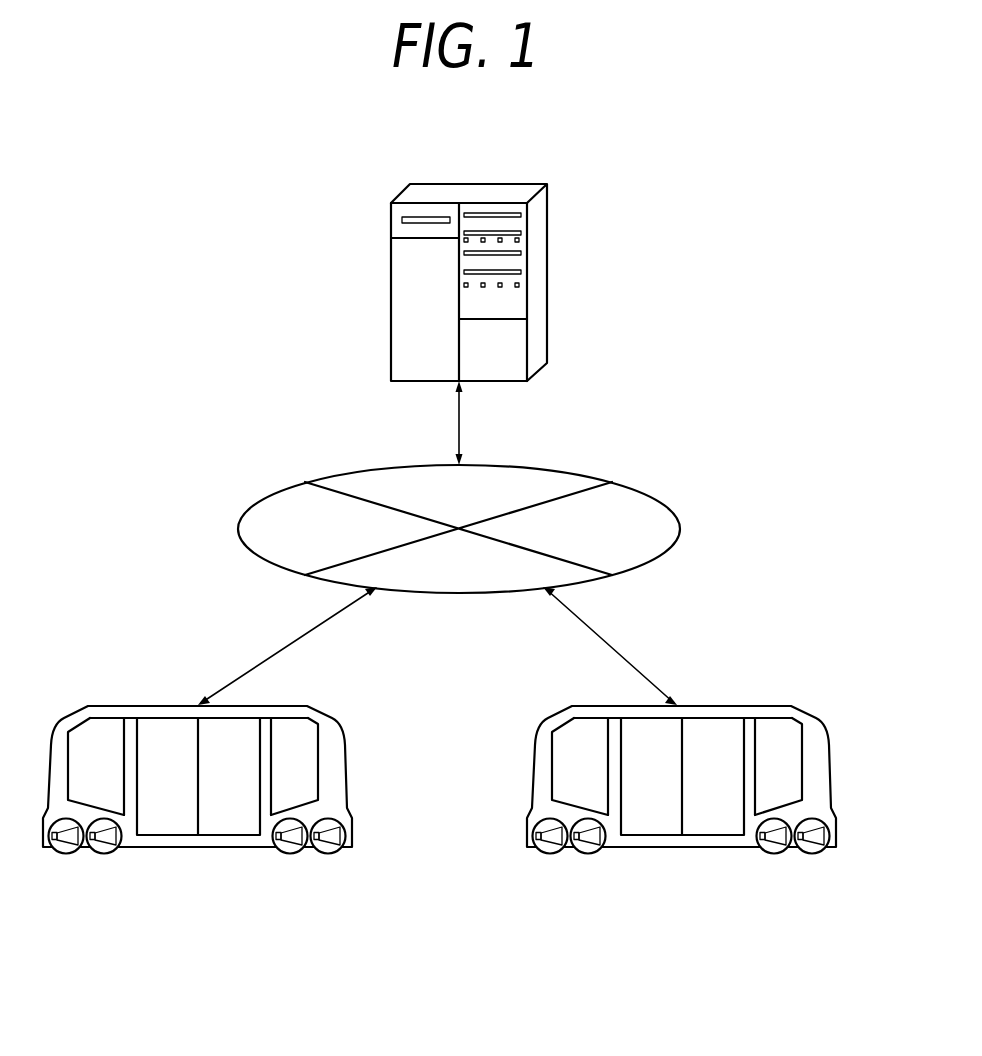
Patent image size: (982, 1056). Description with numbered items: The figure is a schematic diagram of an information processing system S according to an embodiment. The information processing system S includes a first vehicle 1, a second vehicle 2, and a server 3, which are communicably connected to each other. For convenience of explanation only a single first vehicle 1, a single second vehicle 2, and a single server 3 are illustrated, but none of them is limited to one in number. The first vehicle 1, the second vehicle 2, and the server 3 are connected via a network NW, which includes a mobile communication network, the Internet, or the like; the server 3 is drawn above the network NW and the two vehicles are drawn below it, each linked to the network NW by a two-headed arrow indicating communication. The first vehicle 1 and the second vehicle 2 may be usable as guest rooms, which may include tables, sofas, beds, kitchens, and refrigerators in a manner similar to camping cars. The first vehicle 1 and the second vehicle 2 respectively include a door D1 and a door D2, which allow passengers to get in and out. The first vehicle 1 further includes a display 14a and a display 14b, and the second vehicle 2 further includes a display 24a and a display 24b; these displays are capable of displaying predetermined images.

The first vehicle 1 is at (147, 705).
The second vehicle 2 is at (691, 775).
The server 3 is at (547, 248).
The network NW is at (648, 495).
The information processing system S is at (770, 457).
The display 14a is at (308, 733).
The display 14b is at (82, 737).
The display 24a is at (805, 741).
The display 24b is at (575, 737).
The door D1 is at (210, 823).
The door D2 is at (682, 813).